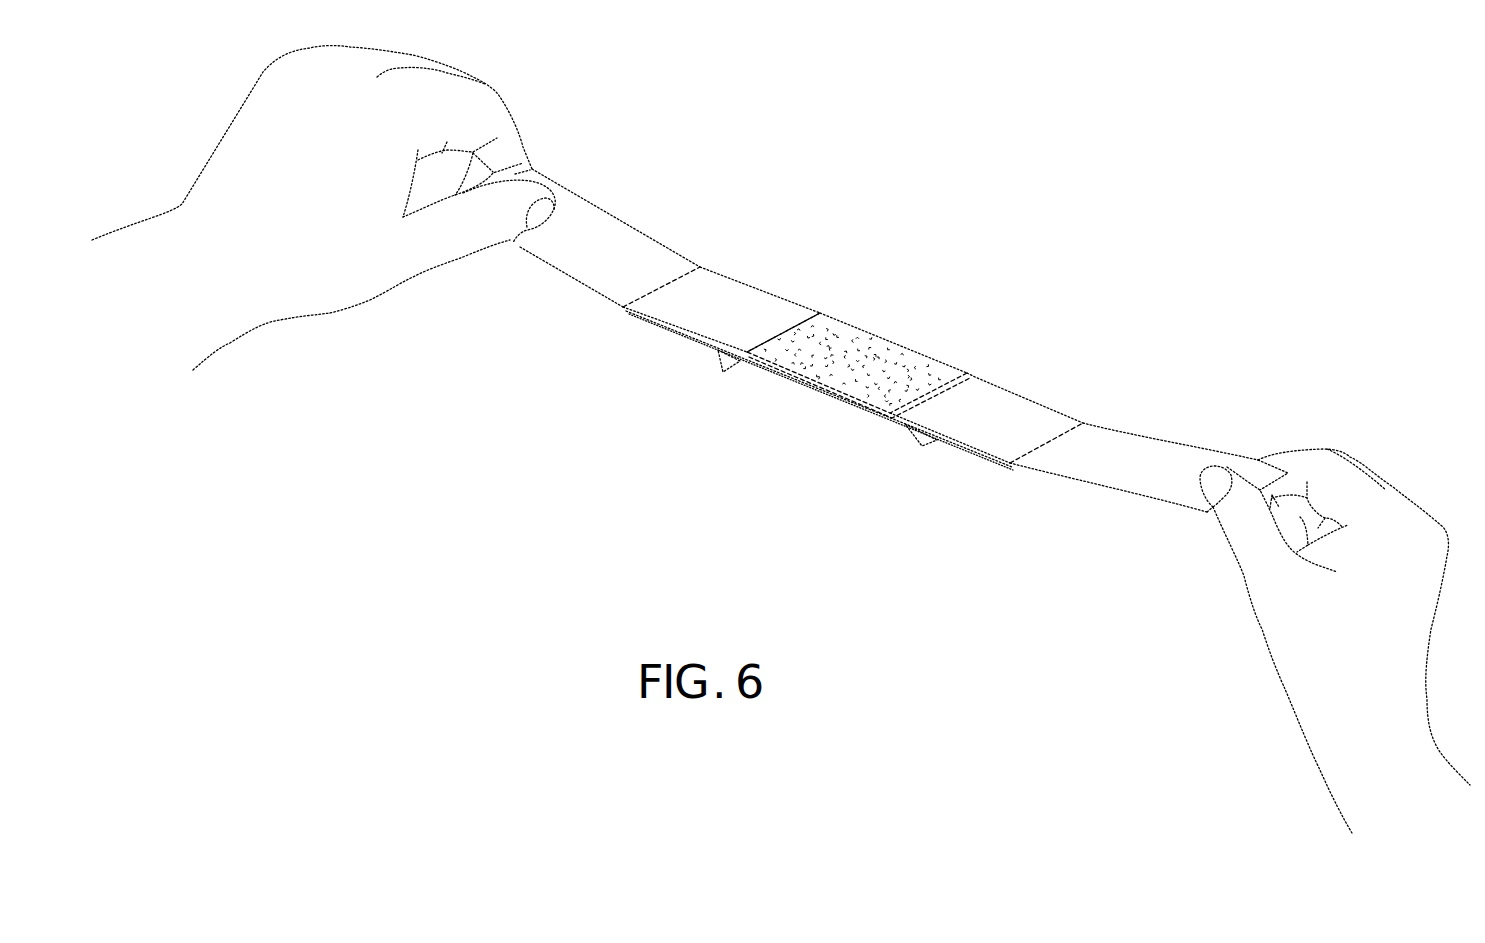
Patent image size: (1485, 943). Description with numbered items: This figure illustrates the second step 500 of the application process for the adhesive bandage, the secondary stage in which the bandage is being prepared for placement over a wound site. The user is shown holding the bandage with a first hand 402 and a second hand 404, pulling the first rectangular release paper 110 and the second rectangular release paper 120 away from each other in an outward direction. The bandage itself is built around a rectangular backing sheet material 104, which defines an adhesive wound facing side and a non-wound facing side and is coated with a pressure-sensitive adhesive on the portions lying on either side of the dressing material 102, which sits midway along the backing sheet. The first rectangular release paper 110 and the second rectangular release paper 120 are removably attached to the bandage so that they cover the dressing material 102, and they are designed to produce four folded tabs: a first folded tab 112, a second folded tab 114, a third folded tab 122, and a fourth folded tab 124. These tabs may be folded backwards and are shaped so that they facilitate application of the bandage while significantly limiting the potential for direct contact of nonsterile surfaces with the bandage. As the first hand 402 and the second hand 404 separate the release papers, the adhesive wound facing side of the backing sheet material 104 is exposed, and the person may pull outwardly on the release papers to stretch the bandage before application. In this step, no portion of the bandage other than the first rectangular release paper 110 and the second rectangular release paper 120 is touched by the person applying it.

The second step 500 is at (1138, 117).
The first hand 402 is at (305, 157).
The second hand 404 is at (1337, 647).
The dressing material 102 is at (882, 357).
The rectangular backing sheet material 104 is at (758, 287).
The first rectangular release paper 110 is at (577, 254).
The first folded tab 112 is at (515, 173).
The second folded tab 114 is at (730, 367).
The second rectangular release paper 120 is at (1125, 474).
The third folded tab 122 is at (1205, 513).
The fourth folded tab 124 is at (920, 430).